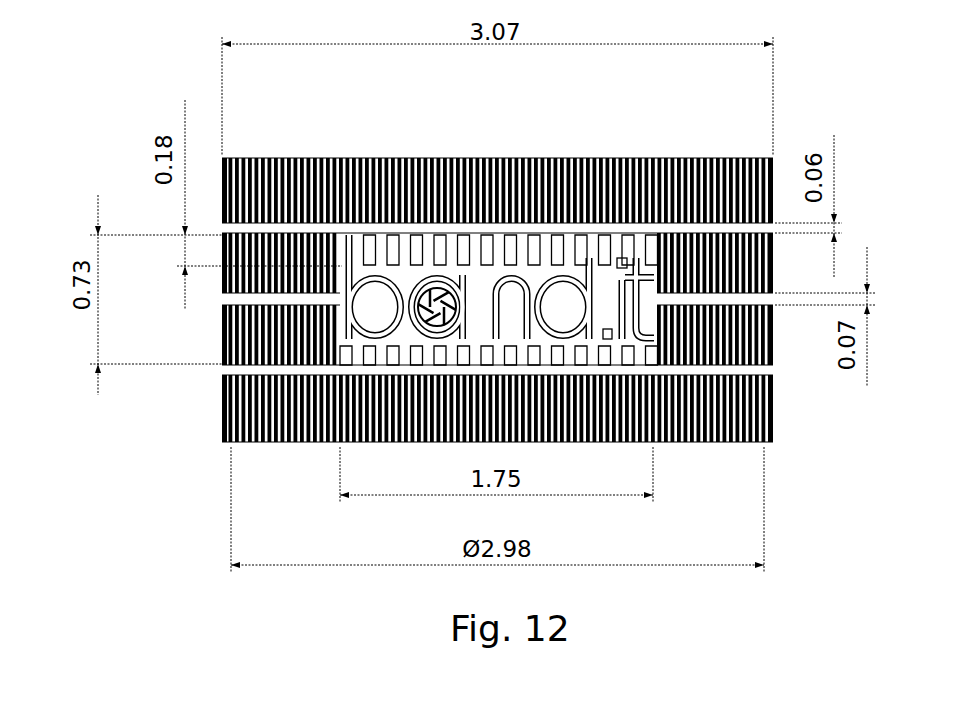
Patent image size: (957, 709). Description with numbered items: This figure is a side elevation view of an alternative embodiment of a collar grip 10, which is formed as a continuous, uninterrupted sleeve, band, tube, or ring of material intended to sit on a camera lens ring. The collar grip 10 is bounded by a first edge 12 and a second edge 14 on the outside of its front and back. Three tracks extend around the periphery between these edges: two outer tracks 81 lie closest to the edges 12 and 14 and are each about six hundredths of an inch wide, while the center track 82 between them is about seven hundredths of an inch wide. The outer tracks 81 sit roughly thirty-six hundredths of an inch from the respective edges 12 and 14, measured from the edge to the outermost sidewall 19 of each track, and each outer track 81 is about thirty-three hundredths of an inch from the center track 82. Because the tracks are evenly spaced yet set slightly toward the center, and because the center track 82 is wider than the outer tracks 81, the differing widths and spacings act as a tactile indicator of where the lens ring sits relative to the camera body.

The collar grip 10 is at (115, 137).
The first edge 12 is at (604, 157).
The second edge 14 is at (665, 442).
The outermost sidewall 19 is at (415, 222).
The outer tracks 81 is at (720, 224).
The center track 82 is at (228, 297).